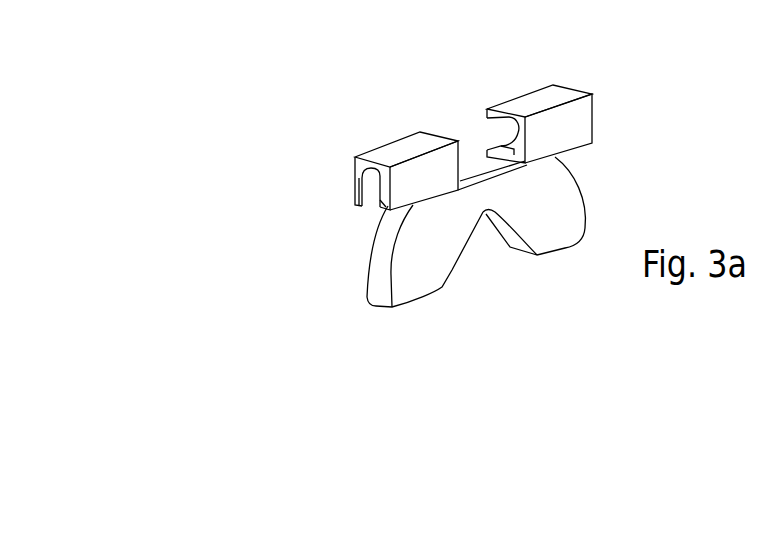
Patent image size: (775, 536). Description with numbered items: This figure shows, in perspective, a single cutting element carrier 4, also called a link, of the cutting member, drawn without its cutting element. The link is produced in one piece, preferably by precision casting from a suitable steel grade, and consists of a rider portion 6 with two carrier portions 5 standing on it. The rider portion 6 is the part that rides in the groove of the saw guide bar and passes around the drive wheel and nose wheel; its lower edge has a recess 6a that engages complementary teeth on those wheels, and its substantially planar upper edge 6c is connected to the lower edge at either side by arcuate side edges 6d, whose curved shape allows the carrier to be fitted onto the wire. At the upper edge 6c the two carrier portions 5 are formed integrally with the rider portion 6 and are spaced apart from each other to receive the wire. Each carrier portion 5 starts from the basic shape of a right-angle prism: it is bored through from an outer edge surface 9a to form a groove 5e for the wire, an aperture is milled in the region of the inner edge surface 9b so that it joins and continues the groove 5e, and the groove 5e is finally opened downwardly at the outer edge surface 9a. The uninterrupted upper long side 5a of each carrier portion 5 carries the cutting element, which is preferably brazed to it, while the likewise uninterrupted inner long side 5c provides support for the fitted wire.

The cutting element carrier 4 is at (360, 301).
The carrier portion 5 is at (399, 133).
The upper long side 5a is at (572, 95).
The inner long side 5c is at (582, 115).
The groove 5e is at (373, 180).
The rider portion 6 is at (443, 245).
The recess 6a is at (485, 240).
The upper edge 6c is at (481, 172).
The arcuate side edge 6d is at (382, 245).
The outer edge surface 9a is at (355, 160).
The inner edge surface 9b is at (512, 116).